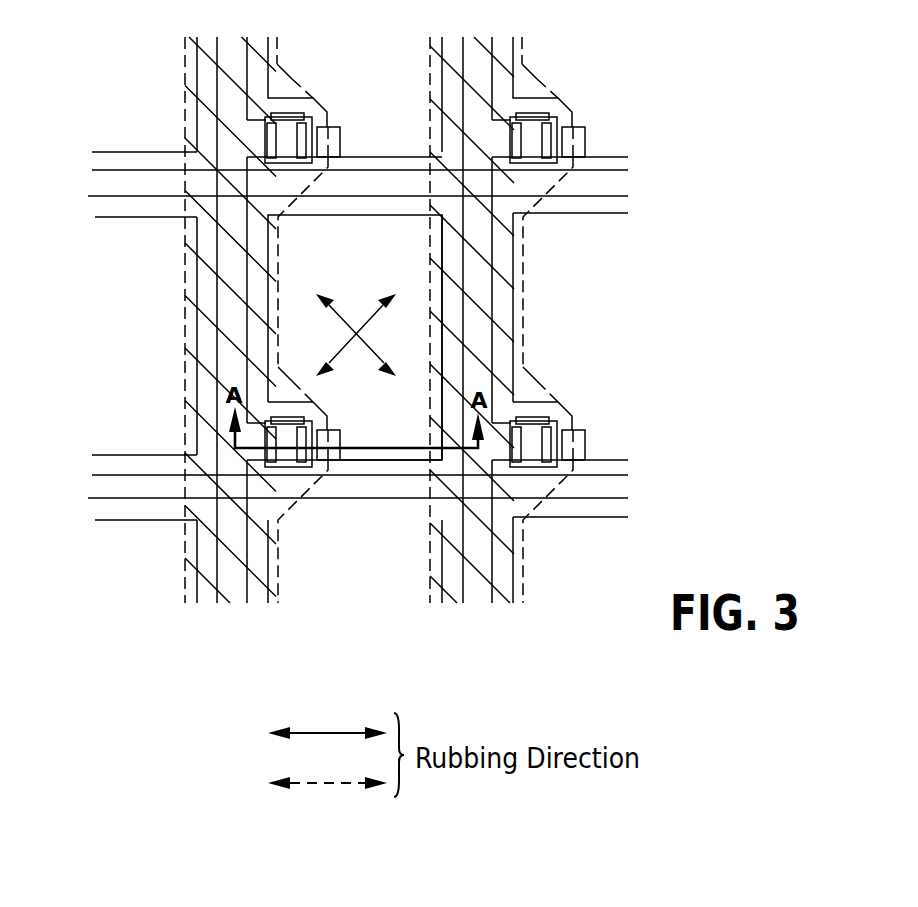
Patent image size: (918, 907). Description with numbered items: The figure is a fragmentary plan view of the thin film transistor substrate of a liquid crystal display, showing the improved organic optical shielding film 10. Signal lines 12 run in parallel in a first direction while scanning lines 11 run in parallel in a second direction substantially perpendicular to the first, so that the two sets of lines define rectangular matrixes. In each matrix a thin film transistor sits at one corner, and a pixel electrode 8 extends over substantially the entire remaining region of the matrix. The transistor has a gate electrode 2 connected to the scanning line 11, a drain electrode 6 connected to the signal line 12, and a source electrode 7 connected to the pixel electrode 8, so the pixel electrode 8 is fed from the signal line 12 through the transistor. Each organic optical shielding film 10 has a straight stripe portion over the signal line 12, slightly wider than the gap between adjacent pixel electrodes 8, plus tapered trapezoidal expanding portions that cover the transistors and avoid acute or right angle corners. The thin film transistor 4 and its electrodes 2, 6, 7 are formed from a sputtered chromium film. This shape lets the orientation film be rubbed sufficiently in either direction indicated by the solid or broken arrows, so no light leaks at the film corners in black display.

The gate electrode 2 is at (294, 477).
The thin film transistor 4 is at (270, 412).
The drain electrode 6 is at (262, 456).
The source electrode 7 is at (331, 456).
The pixel electrode 8 is at (367, 232).
The organic optical shielding film 10 is at (522, 290).
The scanning line 11 is at (597, 493).
The signal line 12 is at (470, 582).